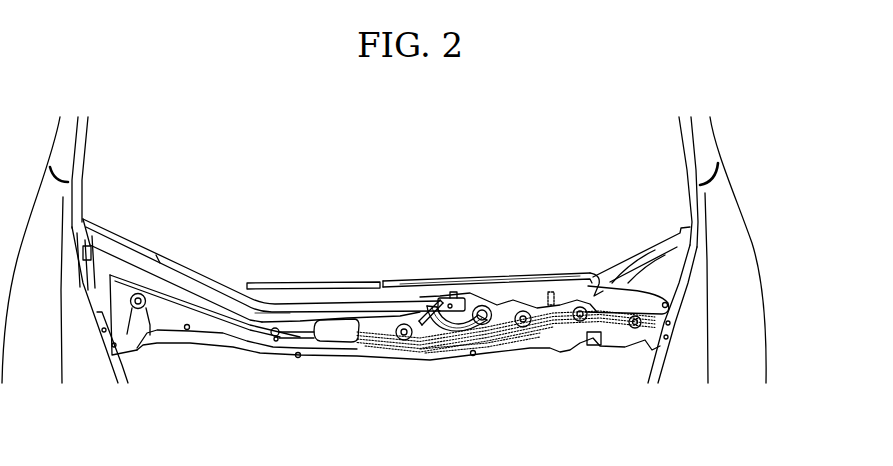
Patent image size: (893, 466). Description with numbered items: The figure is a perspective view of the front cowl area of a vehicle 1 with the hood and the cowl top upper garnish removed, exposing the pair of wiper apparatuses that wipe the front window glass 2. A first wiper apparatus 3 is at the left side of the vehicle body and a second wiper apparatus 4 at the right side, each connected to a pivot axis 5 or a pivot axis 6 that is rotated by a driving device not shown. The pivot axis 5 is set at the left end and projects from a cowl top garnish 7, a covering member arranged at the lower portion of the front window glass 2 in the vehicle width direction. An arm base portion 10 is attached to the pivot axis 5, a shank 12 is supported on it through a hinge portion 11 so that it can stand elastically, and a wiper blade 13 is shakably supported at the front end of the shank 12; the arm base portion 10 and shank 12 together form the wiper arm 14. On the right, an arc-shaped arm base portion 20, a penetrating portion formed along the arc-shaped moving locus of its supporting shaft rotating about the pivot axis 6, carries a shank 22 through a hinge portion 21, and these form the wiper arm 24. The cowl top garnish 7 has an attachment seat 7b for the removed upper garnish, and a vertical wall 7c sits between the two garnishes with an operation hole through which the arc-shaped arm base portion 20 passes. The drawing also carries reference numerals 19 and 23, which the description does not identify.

The vehicle 1 is at (760, 140).
The front window glass 2 is at (397, 179).
The first wiper apparatus 3 is at (531, 268).
The second wiper apparatus 4 is at (188, 262).
The pivot axis 5 is at (677, 313).
The pivot axis 6 is at (481, 343).
The cowl top garnish 7 is at (533, 349).
The attachment seat 7b is at (142, 352).
The vertical wall 7c is at (437, 309).
The arm base portion 10 is at (650, 267).
The hinge portion 11 is at (594, 277).
The shank 12 is at (447, 276).
The wiper blade 13 is at (287, 281).
The wiper arm 14 is at (532, 267).
The reinforcement member 19 is at (492, 343).
The arc-shaped arm base portion 20 is at (438, 335).
The hinge portion 21 is at (357, 341).
The shank 22 is at (272, 313).
The seal member 23 is at (128, 240).
The wiper arm 24 is at (368, 317).